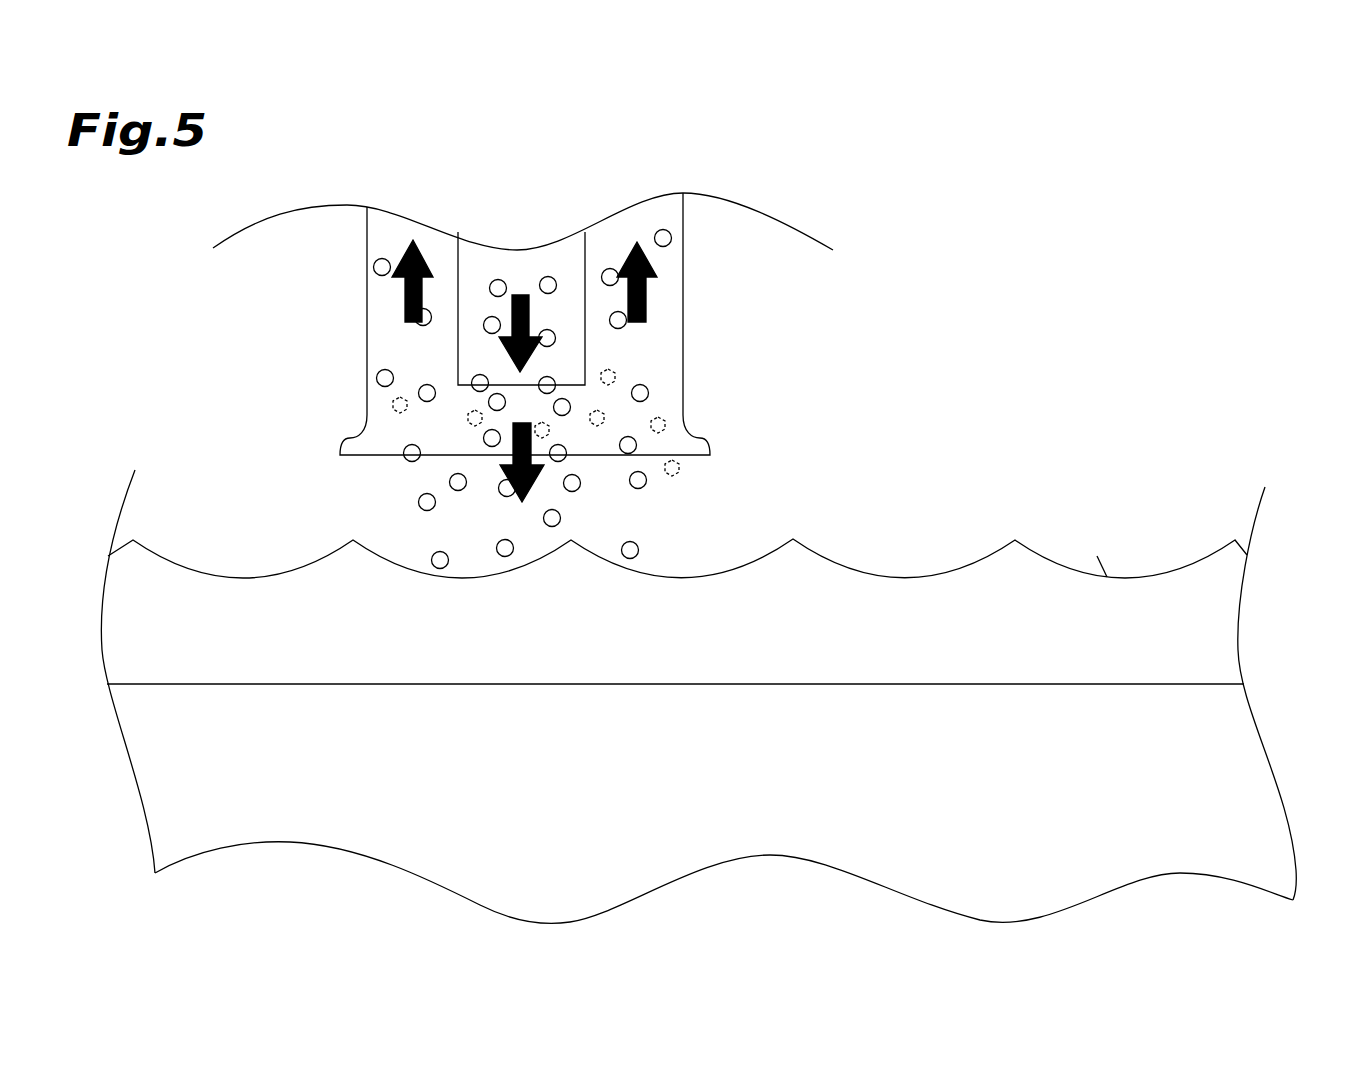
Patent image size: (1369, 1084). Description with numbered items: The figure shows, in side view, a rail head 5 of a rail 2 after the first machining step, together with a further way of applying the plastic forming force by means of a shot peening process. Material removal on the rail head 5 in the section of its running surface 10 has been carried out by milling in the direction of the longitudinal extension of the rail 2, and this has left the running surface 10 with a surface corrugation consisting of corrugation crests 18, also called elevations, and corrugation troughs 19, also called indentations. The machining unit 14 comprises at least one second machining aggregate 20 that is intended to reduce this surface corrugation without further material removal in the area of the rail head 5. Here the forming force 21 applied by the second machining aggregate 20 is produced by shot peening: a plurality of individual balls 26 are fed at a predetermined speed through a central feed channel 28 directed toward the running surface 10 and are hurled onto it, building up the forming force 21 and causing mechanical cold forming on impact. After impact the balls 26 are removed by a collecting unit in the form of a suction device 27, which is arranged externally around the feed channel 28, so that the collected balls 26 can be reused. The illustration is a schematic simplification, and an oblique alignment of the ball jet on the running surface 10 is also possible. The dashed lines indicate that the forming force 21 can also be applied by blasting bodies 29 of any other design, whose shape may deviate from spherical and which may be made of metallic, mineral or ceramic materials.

The rail 2 is at (1247, 457).
The rail head 5 is at (1284, 600).
The running surface 10 is at (1107, 577).
The machining unit 14 is at (752, 182).
The corrugation crests 18 is at (364, 532).
The corrugation troughs 19 is at (860, 589).
The second machining aggregate 20 is at (618, 195).
The forming force 21 is at (510, 433).
The shot peening balls 26 is at (412, 502).
The suction device 27 is at (616, 236).
The central feed channel 28 is at (575, 350).
The blasting bodies 29 is at (665, 428).